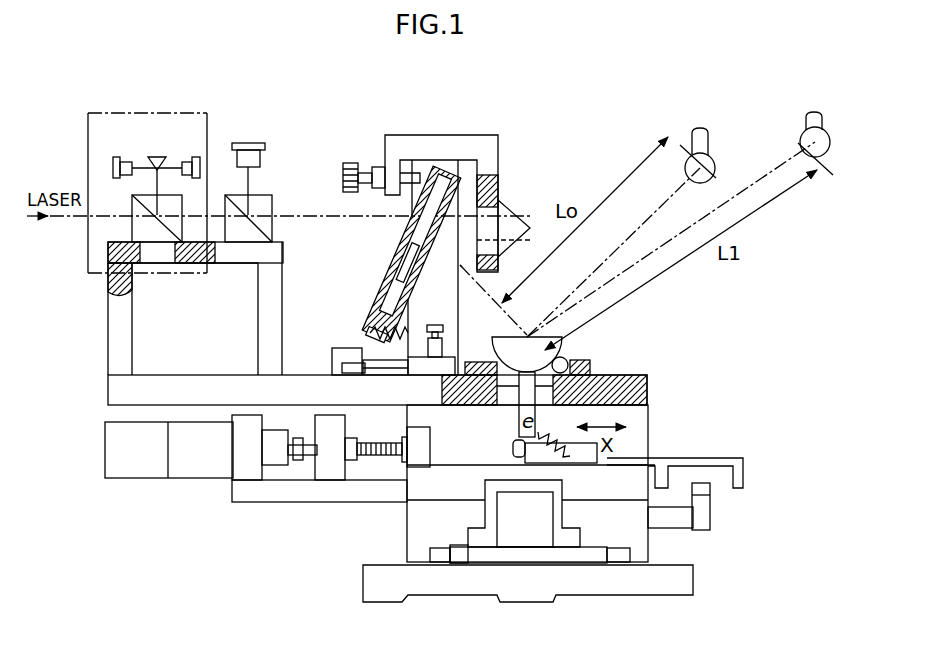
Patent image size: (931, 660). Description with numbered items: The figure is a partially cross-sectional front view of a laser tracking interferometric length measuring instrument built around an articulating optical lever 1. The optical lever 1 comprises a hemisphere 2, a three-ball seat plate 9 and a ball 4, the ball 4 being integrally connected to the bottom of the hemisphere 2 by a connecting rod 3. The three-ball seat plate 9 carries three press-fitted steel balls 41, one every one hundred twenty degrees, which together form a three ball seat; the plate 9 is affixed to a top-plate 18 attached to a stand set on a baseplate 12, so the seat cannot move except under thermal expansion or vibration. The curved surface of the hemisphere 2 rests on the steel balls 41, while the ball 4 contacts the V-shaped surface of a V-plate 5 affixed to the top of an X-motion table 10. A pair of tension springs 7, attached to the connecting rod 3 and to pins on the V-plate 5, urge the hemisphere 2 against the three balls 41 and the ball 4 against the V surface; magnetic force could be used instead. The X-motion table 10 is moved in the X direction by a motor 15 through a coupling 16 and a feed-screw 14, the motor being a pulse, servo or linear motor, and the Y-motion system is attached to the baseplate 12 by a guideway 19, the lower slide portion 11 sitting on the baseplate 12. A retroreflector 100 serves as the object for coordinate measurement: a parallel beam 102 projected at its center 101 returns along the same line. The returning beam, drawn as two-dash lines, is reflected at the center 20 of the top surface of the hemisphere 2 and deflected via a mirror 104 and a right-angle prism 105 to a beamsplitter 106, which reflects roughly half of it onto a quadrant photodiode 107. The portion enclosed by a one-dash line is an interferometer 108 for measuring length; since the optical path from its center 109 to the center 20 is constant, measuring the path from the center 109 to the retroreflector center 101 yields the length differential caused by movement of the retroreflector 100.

The articulating optical lever 1 is at (550, 333).
The hemisphere 2 is at (492, 345).
The connecting rod 3 is at (518, 412).
The ball 4 is at (513, 447).
The V-plate 5 is at (582, 463).
The tension springs 7 is at (540, 431).
The three-ball seat plate 9 is at (590, 368).
The X-motion table 10 is at (435, 493).
The slider base 11 is at (422, 537).
The baseplate 12 is at (622, 583).
The feed-screw 14 is at (375, 455).
The motor 15 is at (147, 465).
The coupling 16 is at (275, 458).
The top-plate 18 is at (113, 390).
The guideway 19 is at (455, 553).
The center of the top surface of the hemisphere 20 is at (533, 335).
The steel ball 41 is at (568, 361).
The retroreflector 100 is at (715, 170).
The center of the retroreflector 101 is at (718, 153).
The parallel beam 102 is at (640, 226).
The mirror 104 is at (432, 262).
The right-angle prism 105 is at (538, 199).
The beamsplitter 106 is at (258, 198).
The quadrant photodiode 107 is at (248, 143).
The interferometer 108 is at (157, 112).
The center of the interferometer 109 is at (152, 220).